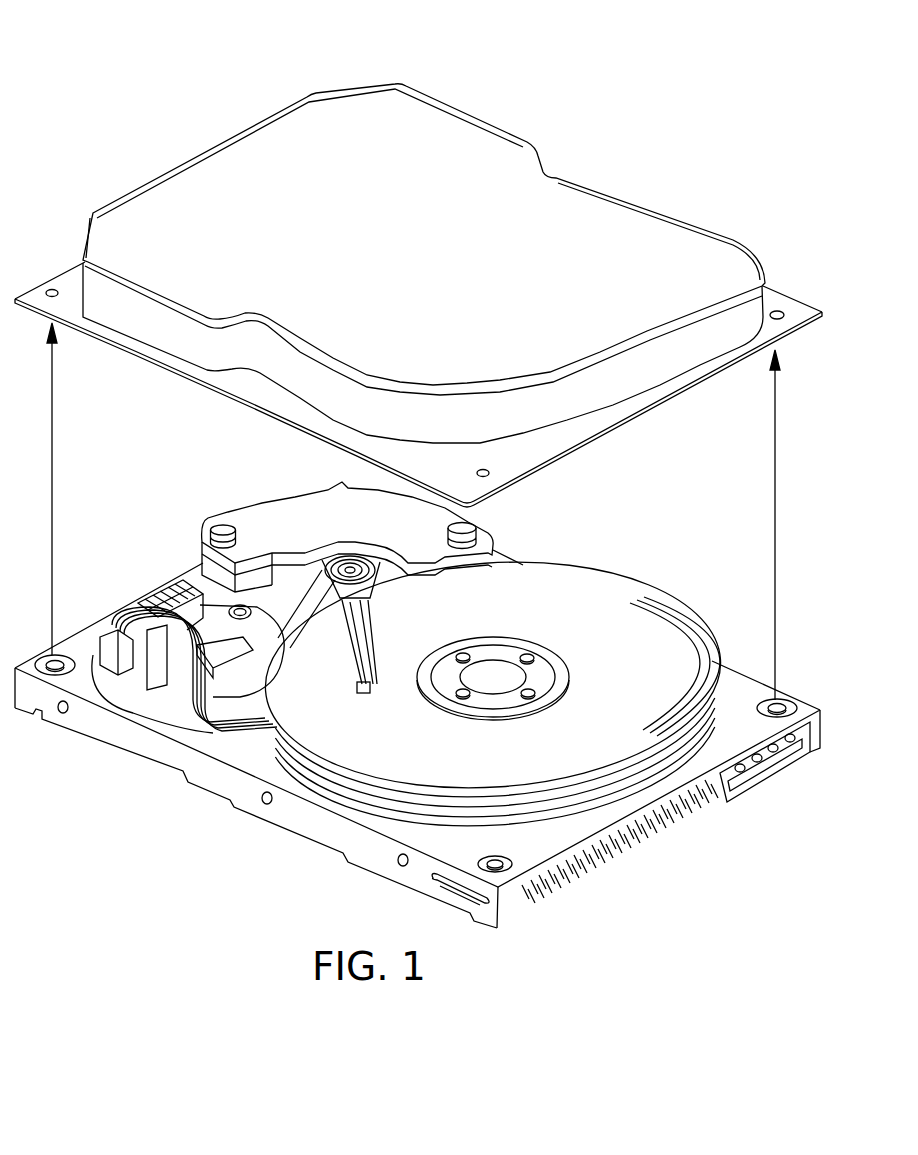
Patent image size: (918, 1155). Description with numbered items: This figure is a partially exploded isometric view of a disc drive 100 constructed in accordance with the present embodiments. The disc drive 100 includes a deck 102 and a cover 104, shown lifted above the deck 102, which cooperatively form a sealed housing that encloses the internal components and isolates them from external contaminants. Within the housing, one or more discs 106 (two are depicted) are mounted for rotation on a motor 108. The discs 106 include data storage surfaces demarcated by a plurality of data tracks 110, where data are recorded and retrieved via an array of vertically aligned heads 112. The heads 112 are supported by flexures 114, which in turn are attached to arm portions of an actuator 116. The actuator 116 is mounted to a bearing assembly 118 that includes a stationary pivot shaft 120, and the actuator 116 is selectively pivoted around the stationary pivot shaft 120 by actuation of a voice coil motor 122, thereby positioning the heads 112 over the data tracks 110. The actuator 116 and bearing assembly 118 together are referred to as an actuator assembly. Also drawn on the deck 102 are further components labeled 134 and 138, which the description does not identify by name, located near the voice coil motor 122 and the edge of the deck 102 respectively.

The disc drive 100 is at (203, 92).
The deck 102 is at (743, 683).
The cover 104 is at (607, 257).
The discs 106 is at (511, 766).
The motor 108 is at (490, 670).
The data tracks 110 is at (683, 663).
The heads 112 is at (373, 695).
The flexures 114 is at (360, 657).
The actuator 116 is at (362, 572).
The bearing assembly 118 is at (375, 573).
The stationary pivot shaft 120 is at (375, 600).
The voice coil motor 122 is at (242, 500).
The voice coil 134 is at (285, 573).
The flex cable connector 138 is at (177, 673).